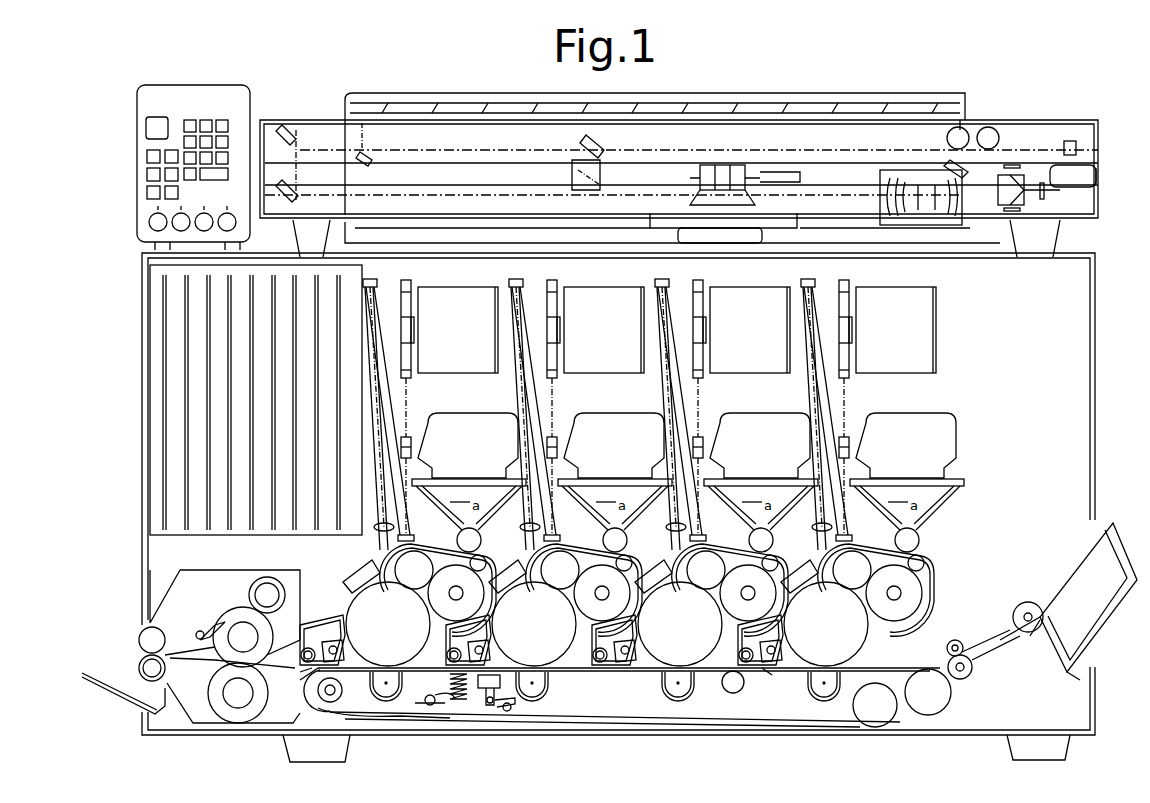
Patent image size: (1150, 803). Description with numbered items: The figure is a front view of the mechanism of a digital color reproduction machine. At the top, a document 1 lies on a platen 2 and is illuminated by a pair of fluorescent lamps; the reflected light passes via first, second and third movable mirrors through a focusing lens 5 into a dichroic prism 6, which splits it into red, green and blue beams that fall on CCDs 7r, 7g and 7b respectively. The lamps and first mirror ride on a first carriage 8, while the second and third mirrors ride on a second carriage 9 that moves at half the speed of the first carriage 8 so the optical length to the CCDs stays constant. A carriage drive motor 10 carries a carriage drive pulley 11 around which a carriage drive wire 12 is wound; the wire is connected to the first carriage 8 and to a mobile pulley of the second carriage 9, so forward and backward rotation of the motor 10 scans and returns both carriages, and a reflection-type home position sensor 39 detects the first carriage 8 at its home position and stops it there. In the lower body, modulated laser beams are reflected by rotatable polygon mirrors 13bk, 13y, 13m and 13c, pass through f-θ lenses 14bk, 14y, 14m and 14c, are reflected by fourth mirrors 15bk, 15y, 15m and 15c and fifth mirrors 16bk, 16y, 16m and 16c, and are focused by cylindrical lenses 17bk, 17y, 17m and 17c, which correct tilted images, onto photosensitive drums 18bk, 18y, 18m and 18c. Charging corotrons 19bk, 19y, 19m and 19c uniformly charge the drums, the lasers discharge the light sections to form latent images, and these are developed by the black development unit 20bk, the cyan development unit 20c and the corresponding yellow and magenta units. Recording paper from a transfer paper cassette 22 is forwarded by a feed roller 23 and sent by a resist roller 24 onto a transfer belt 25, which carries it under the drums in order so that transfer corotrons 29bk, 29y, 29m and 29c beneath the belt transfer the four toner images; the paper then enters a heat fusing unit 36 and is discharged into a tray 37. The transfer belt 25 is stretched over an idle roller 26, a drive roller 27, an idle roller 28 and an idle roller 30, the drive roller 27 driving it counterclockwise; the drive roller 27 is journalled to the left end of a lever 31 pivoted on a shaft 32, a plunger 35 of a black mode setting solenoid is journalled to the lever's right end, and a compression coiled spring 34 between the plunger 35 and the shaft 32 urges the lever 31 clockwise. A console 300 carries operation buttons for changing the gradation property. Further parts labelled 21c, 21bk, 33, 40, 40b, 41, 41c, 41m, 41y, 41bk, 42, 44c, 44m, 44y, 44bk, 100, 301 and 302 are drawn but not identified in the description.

The document 1 is at (795, 100).
The platen (contact glass) 2 is at (812, 113).
The focusing lens 5 is at (905, 170).
The dichroic prism 6 is at (1010, 175).
The CCD (solid image pickup element) 7r is at (1011, 156).
The CCD (solid image pickup element) 7g is at (1010, 212).
The CCD (solid image pickup element) 7b is at (1044, 198).
The first carriage 8 is at (692, 157).
The second carriage 9 is at (605, 145).
The carriage drive motor 10 is at (770, 232).
The carriage drive pulley 11 is at (735, 165).
The carriage drive wire 12 is at (760, 175).
The rotatable polygon mirror 13c is at (408, 279).
The rotatable polygon mirror 13m is at (554, 279).
The rotatable polygon mirror 13y is at (700, 279).
The rotatable polygon mirror 13bk is at (846, 279).
The f-θ lens 14c is at (410, 437).
The f-θ lens 14m is at (556, 437).
The f-θ lens 14y is at (702, 437).
The f-θ lens 14bk is at (848, 437).
The fourth mirror 15c is at (408, 535).
The fourth mirror 15m is at (554, 535).
The fourth mirror 15y is at (700, 535).
The fourth mirror 15bk is at (920, 528).
The fifth mirror 16c is at (368, 279).
The fifth mirror 16m is at (514, 279).
The fifth mirror 16y is at (660, 279).
The fifth mirror 16bk is at (806, 279).
The cylindrical lens 17c is at (374, 527).
The cylindrical lens 17m is at (520, 527).
The cylindrical lens 17y is at (666, 527).
The cylindrical lens 17bk is at (812, 527).
The photosensitive drum 18c is at (347, 620).
The photosensitive drum 18m is at (560, 668).
The photosensitive drum 18y is at (706, 668).
The photosensitive drum 18bk is at (866, 630).
The charging corotron 19c is at (352, 578).
The charging corotron 19m is at (516, 552).
The charging corotron 19y is at (662, 552).
The charging corotron 19bk is at (810, 552).
The cyan development unit 20c is at (390, 558).
The black development unit 20bk is at (925, 560).
The transfer position (cyan) 21c is at (300, 672).
The transfer position (black) 21bk is at (767, 670).
The transfer paper cassette 22 is at (1052, 655).
The feed roller 23 is at (1022, 602).
The resist roller 24 is at (960, 635).
The transfer belt 25 is at (880, 684).
The idle roller 26 is at (940, 697).
The drive roller 27 is at (318, 700).
The idle roller 28 is at (885, 730).
The transfer corotron 29c is at (388, 698).
The transfer corotron 29m is at (548, 700).
The transfer corotron 29y is at (678, 698).
The transfer corotron 29bk is at (824, 698).
The idle roller 30 is at (735, 693).
The lever 31 is at (372, 718).
The shaft 32 is at (456, 700).
The roller 33 is at (507, 712).
The compression coiled spring 34 is at (488, 705).
The plunger 35 is at (450, 712).
The heat fusing unit 36 is at (168, 588).
The tray 37 is at (96, 668).
The home position sensor 39 is at (1076, 146).
The optical scanning unit 40 is at (418, 158).
The control unit 40b is at (1096, 168).
The mirror 41 is at (372, 150).
The toner cartridge (cyan) 41c is at (470, 373).
The toner cartridge (magenta) 41m is at (616, 373).
The toner cartridge (yellow) 41y is at (762, 373).
The toner cartridge (black) 41bk is at (912, 373).
The developing unit hopper 42 is at (956, 495).
The photosensitive drum (cyan) 44c is at (388, 624).
The photosensitive drum (magenta) 44m is at (534, 624).
The photosensitive drum (yellow) 44y is at (680, 624).
The photosensitive drum (black) 44bk is at (826, 624).
The printer body 100 is at (142, 258).
The console 300 is at (158, 142).
The start key 301 is at (146, 128).
The mode keys 302 is at (147, 156).